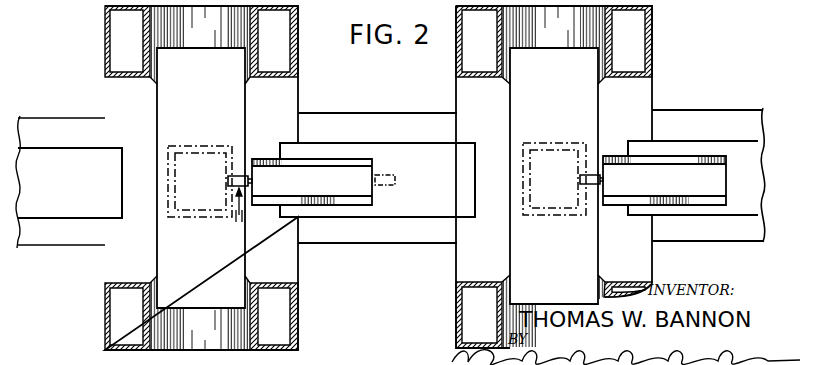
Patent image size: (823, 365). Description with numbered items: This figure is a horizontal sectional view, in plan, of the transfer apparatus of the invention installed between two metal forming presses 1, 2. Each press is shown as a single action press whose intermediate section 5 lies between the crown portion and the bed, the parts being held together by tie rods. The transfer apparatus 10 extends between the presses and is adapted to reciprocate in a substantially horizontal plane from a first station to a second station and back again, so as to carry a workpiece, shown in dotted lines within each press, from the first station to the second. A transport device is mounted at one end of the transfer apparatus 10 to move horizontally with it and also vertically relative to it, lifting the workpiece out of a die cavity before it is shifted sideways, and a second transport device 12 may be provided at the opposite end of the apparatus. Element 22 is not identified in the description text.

The metal forming press 1 is at (298, 97).
The metal forming press 2 is at (653, 96).
The intermediate section 5 is at (105, 47).
The transfer apparatus 10 is at (382, 135).
The transport device 12 is at (391, 184).
The coupling block 22 is at (338, 158).